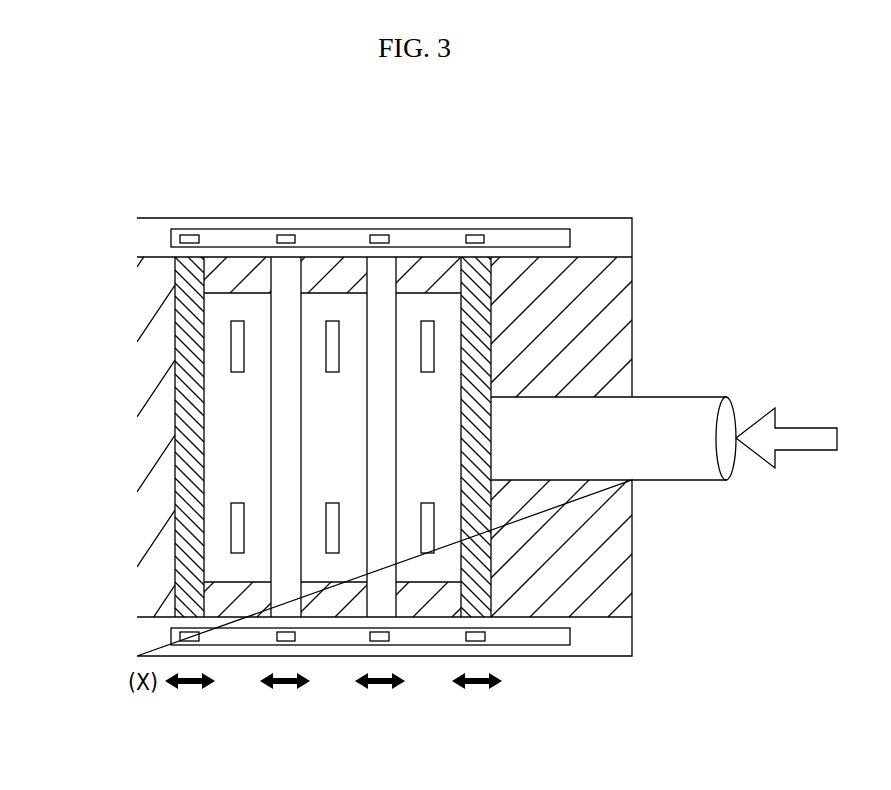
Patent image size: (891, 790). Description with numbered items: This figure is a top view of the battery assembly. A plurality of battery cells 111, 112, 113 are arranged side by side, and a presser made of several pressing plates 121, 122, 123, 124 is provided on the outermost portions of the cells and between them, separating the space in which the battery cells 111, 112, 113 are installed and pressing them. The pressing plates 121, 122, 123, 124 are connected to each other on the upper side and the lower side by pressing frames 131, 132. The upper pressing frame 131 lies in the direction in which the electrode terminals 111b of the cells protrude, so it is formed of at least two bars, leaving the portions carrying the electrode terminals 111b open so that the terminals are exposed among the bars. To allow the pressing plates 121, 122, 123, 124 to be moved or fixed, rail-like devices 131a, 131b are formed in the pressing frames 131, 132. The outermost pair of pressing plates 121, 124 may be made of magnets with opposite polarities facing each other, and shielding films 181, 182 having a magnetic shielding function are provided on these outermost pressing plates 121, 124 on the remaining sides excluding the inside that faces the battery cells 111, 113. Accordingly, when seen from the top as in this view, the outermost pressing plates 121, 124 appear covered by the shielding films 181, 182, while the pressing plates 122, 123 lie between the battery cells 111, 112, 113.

The upper pressing frame 131 is at (145, 233).
The device for moving or fixing the pressing plates 131a is at (556, 638).
The device for moving or fixing the pressing plates 131b is at (543, 235).
The pressing frame 132 is at (155, 432).
The shielding film 181 is at (192, 478).
The shielding film 182 is at (487, 330).
The pressing plate 121 is at (188, 275).
The pressing plate 122 is at (284, 277).
The pressing plate 123 is at (383, 277).
The pressing plate 124 is at (478, 277).
The battery cell 111 is at (242, 300).
The electrode terminal 111b is at (233, 343).
The battery cell 112 is at (333, 300).
The battery cell 113 is at (430, 300).